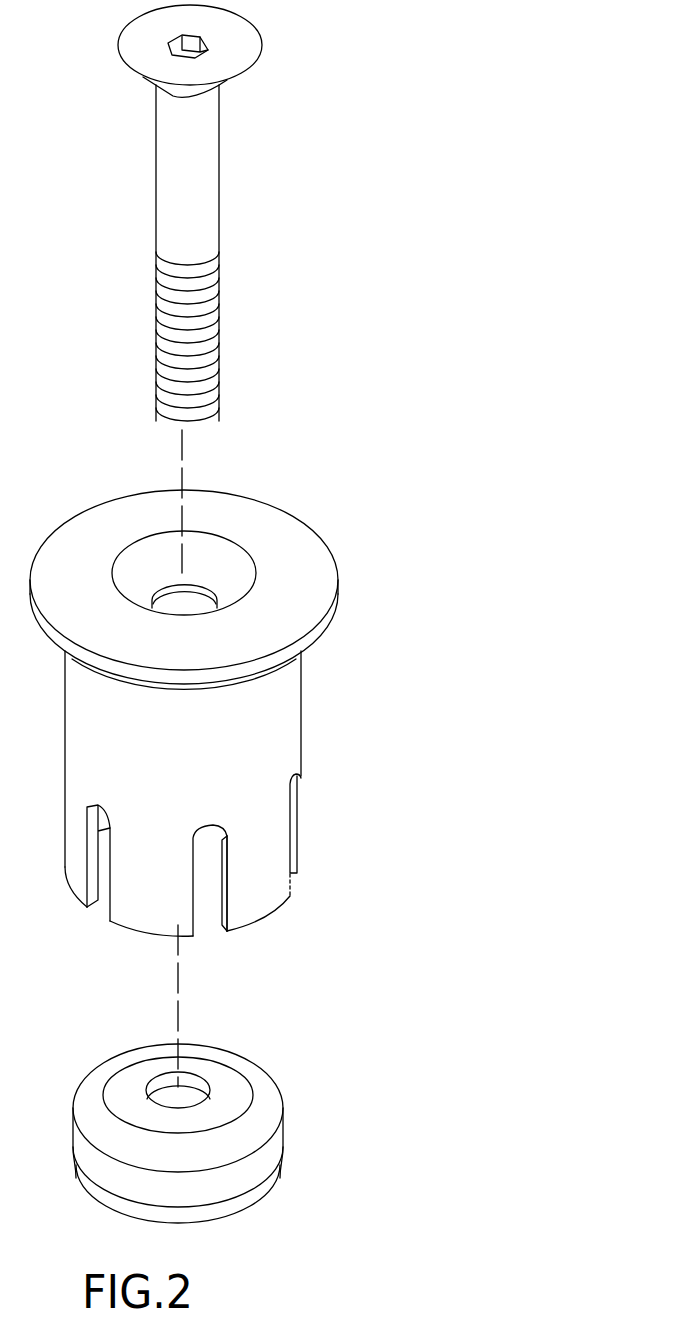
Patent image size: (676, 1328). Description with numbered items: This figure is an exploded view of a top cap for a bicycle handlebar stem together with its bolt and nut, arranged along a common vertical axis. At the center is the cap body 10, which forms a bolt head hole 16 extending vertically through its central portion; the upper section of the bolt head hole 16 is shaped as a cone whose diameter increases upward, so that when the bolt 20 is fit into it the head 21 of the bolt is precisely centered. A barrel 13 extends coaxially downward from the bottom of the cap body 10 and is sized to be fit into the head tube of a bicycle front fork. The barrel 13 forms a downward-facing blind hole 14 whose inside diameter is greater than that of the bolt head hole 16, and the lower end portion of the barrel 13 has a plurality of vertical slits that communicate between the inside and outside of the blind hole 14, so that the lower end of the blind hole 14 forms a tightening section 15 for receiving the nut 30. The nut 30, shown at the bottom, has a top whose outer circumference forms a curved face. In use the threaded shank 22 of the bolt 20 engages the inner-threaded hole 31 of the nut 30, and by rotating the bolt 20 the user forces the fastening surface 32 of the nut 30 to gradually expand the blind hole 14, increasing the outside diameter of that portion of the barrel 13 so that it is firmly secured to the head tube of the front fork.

The cap body 10 is at (236, 708).
The barrel 13 is at (290, 723).
The blind hole 14 is at (213, 853).
The tightening section 15 is at (232, 897).
The bolt head hole 16 is at (130, 565).
The bolt 20 is at (244, 213).
The head 21 is at (245, 42).
The threaded shank 22 is at (215, 335).
The nut 30 is at (219, 1138).
The inner-threaded hole 31 is at (157, 1093).
The fastening surface 32 is at (267, 1087).